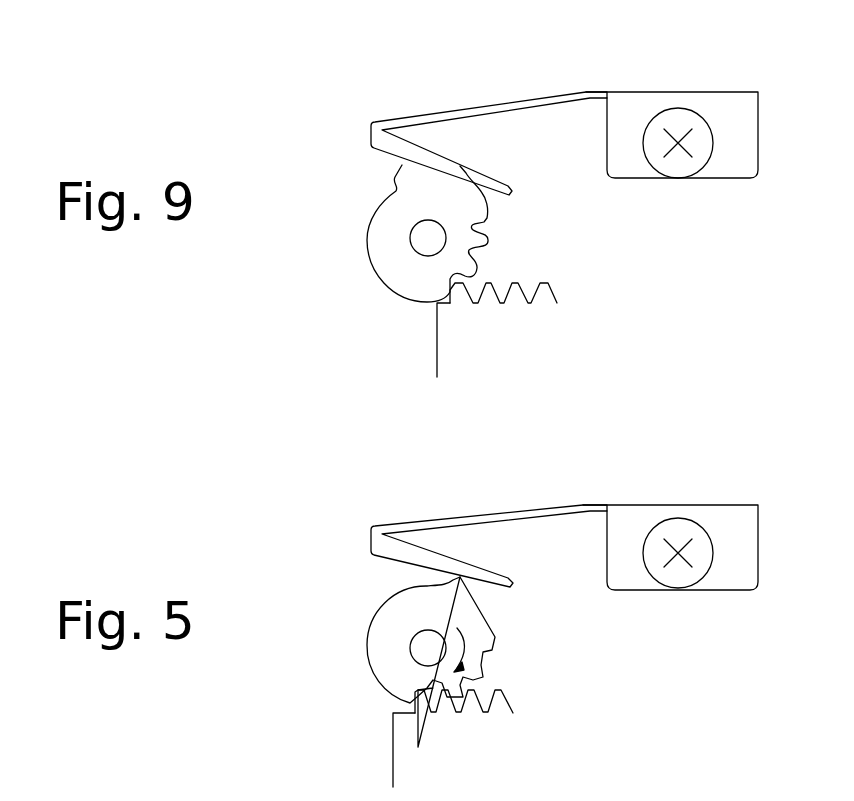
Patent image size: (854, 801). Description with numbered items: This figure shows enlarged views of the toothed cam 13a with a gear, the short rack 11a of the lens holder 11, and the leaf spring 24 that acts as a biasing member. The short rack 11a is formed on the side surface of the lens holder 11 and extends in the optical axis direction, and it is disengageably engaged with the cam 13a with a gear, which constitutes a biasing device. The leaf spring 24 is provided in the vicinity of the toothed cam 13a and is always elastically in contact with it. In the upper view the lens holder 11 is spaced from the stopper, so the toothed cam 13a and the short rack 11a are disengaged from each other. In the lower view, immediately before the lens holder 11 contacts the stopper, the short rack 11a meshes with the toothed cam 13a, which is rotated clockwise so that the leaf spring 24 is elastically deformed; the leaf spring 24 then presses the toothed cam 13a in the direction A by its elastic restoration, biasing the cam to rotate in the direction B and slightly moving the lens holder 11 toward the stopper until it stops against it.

In FIG. 9, the leaf spring 24 is at (478, 110).
In FIG. 5, the leaf spring 24 is at (497, 517).
In FIG. 9, the cam with a gear 13a is at (457, 213).
In FIG. 5, the cam with a gear 13a is at (497, 632).
In FIG. 9, the short rack 11a is at (530, 303).
In FIG. 5, the short rack 11a is at (483, 710).
In FIG. 9, the lens holder 11 is at (480, 342).
In FIG. 5, the lens holder 11 is at (423, 760).
In FIG. 5, the direction A is at (460, 613).
In FIG. 5, the direction B is at (490, 660).